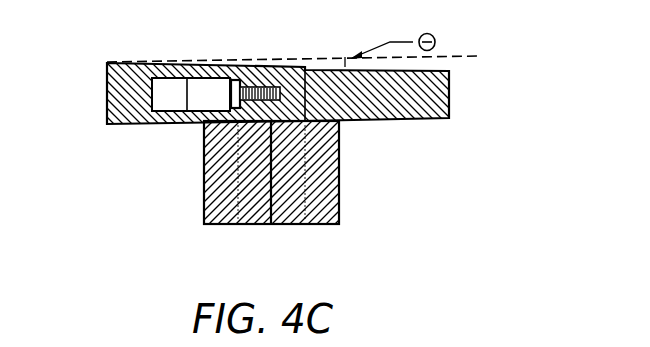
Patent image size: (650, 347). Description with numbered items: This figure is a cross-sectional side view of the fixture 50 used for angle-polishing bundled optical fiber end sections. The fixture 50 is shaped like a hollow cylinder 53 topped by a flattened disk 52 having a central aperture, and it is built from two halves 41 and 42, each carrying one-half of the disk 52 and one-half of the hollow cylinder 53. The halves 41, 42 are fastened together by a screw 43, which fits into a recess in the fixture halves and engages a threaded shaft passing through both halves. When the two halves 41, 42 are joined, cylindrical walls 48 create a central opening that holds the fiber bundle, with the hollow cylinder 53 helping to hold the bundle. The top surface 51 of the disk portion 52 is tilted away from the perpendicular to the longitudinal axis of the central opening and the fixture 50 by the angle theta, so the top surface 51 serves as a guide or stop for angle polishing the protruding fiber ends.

The fixture half 41 is at (234, 172).
The fixture half 42 is at (278, 112).
The screw 43 is at (239, 60).
The cylindrical walls 48 is at (310, 192).
The fixture 50 is at (440, 275).
The top surface 51 is at (309, 49).
The flattened disk 52 is at (117, 98).
The hollow cylinder 53 is at (217, 182).